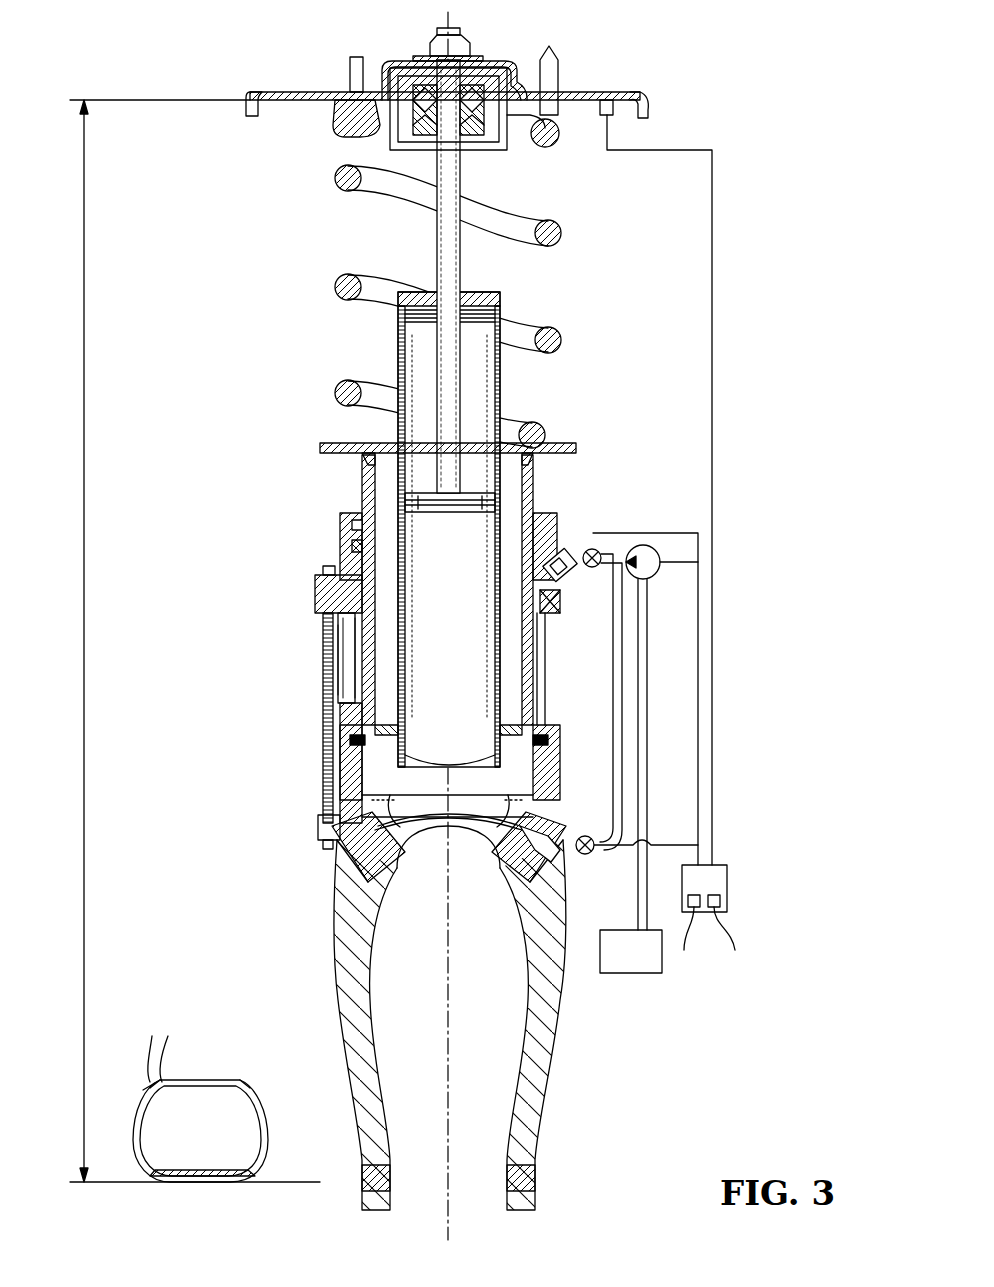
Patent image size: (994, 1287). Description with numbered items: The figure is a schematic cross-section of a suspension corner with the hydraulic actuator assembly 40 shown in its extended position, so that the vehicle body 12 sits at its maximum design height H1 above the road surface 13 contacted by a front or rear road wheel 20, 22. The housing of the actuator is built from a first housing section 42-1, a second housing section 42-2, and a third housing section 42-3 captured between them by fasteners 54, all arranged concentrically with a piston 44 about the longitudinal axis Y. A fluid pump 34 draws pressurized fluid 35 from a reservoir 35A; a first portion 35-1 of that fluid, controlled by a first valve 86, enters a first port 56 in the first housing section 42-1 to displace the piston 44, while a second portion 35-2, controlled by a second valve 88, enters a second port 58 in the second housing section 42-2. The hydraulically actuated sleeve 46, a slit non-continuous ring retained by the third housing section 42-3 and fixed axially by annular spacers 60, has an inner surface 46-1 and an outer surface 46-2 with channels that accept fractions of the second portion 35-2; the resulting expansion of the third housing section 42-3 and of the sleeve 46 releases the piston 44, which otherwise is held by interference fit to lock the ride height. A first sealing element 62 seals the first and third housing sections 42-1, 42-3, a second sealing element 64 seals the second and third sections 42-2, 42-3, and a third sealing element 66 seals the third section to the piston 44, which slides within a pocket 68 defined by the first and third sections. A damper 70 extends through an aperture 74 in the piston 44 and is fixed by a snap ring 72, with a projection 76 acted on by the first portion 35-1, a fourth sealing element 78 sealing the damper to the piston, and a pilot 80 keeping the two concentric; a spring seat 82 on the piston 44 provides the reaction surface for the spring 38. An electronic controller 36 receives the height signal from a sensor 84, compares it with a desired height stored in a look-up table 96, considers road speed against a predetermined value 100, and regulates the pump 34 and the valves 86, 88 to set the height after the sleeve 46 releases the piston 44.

The vehicle body 12 is at (337, 110).
The road surface 13 is at (270, 1190).
The front wheels 20 is at (232, 1084).
The rear wheels 22 is at (151, 1085).
The fluid pump 34 is at (645, 546).
The pressurized fluid 35 is at (646, 684).
The first portion of the pressurized fluid 35-1 is at (623, 805).
The second portion of the pressurized fluid 35-2 is at (613, 552).
The reservoir 35A is at (631, 951).
The electronic controller 36 is at (704, 888).
The spring 38 is at (568, 236).
The actuator assembly 40 is at (560, 675).
The first housing section 42-1 is at (346, 866).
The second housing section 42-2 is at (560, 606).
The third housing section 42-3 is at (531, 745).
The piston 44 is at (534, 470).
The hydraulically actuated sleeve 46 is at (346, 640).
The inner surface 46-1 is at (350, 700).
The outer surface 46-2 is at (350, 680).
The fasteners 54 is at (328, 622).
The first port 56 is at (550, 870).
The second port 58 is at (560, 576).
The annular spacers 60 is at (352, 560).
The first sealing element 62 is at (547, 806).
The second sealing element 64 is at (548, 660).
The third sealing element 66 is at (552, 760).
The pocket 68 is at (400, 855).
The damper 70 is at (478, 378).
The snap ring 72 is at (522, 731).
The aperture 74 is at (408, 762).
The projection 76 is at (440, 818).
The fourth sealing element 78 is at (490, 816).
The pilot 80 is at (345, 796).
The spring seat 82 is at (574, 448).
The sensor 84 is at (638, 98).
The first valve 86 is at (590, 853).
The second valve 88 is at (588, 551).
The look-up table 96 is at (685, 939).
The predetermined value 100 is at (738, 936).
The maximum design height H1 is at (160, 641).
The longitudinal axis Y is at (458, 14).